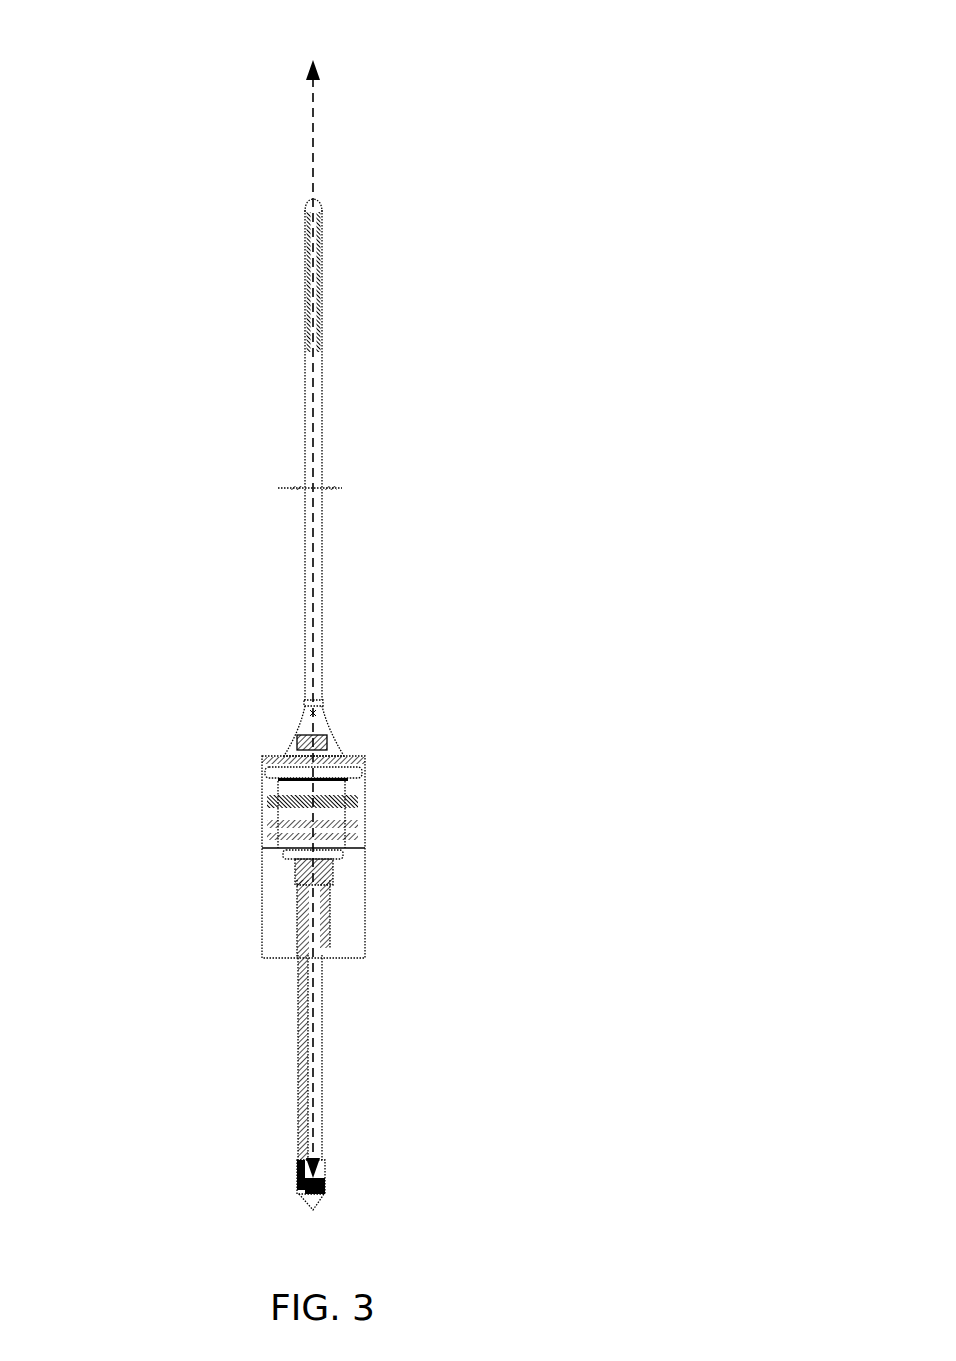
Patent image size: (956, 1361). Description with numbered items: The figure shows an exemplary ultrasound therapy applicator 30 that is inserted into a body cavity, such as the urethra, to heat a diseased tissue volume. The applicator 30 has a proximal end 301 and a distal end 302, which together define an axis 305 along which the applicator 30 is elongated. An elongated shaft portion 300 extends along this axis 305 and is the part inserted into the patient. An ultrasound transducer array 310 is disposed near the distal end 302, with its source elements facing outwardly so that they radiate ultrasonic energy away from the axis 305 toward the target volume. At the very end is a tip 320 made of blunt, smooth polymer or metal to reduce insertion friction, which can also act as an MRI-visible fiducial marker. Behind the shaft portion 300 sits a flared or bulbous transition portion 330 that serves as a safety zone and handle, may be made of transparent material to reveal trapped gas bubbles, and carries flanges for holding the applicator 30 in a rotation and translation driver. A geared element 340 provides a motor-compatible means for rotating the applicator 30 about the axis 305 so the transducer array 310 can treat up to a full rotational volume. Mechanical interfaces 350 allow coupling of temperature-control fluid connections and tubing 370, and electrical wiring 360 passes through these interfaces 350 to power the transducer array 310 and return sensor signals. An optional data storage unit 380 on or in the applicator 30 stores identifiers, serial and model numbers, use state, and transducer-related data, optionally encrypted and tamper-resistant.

The ultrasound therapy applicator 30 is at (138, 162).
The axis 305 is at (344, 129).
The distal end 302 is at (347, 182).
The tip 320 is at (336, 206).
The ultrasound transducer array 310 is at (338, 296).
The elongated shaft portion 300 is at (338, 448).
The transition portion 330 is at (354, 716).
The data storage unit 380 is at (354, 744).
The geared element 340 is at (391, 806).
The mechanical interfaces 350 is at (361, 866).
The electrical wiring 360 is at (356, 926).
The tubing 370 is at (351, 1076).
The proximal end 301 is at (368, 1173).